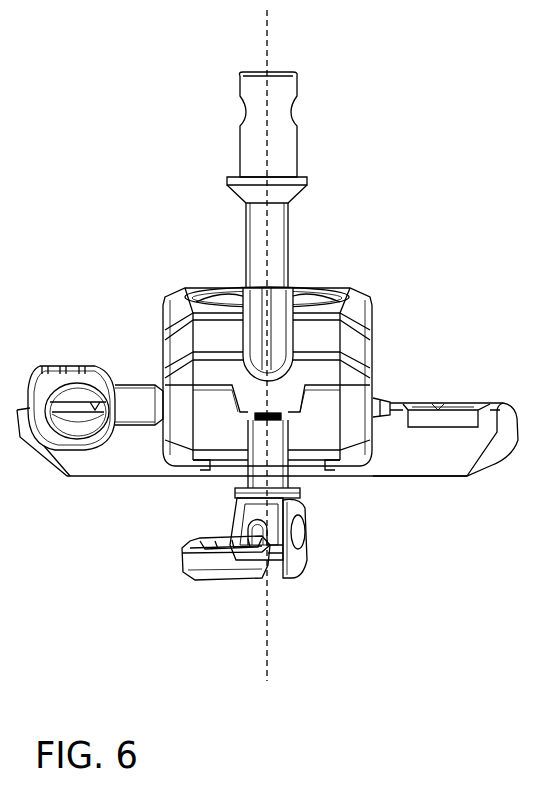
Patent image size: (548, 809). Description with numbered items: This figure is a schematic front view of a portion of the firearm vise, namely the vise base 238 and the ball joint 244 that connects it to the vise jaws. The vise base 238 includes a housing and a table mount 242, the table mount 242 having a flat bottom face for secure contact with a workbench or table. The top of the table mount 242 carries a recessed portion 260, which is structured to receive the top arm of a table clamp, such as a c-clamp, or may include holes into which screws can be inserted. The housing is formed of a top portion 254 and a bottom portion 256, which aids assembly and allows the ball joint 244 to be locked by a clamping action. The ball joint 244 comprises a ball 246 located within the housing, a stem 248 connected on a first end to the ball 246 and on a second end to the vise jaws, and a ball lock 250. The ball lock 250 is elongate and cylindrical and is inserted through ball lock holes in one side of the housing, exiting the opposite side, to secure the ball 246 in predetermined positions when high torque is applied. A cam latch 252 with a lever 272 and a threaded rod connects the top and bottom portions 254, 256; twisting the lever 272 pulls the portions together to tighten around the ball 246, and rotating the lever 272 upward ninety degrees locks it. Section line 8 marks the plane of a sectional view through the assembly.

The section line 8 is at (267, 10).
The vise base 238 is at (383, 382).
The table mount 242 is at (432, 467).
The ball joint 244 is at (312, 298).
The ball 246 is at (243, 297).
The stem 248 is at (248, 215).
The ball lock 250 is at (90, 366).
The cam latch 252 is at (306, 571).
The top portion 254 is at (372, 310).
The bottom portion 256 is at (318, 458).
The recessed portion 260 is at (460, 411).
The lever 272 is at (182, 556).